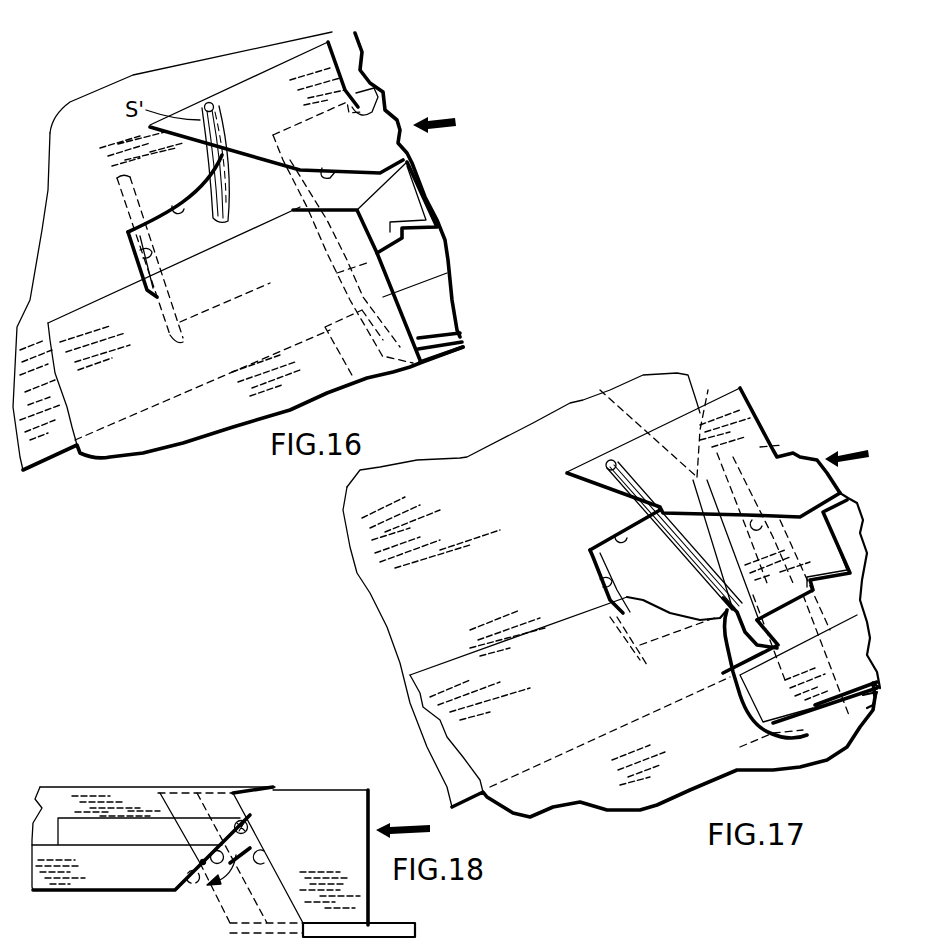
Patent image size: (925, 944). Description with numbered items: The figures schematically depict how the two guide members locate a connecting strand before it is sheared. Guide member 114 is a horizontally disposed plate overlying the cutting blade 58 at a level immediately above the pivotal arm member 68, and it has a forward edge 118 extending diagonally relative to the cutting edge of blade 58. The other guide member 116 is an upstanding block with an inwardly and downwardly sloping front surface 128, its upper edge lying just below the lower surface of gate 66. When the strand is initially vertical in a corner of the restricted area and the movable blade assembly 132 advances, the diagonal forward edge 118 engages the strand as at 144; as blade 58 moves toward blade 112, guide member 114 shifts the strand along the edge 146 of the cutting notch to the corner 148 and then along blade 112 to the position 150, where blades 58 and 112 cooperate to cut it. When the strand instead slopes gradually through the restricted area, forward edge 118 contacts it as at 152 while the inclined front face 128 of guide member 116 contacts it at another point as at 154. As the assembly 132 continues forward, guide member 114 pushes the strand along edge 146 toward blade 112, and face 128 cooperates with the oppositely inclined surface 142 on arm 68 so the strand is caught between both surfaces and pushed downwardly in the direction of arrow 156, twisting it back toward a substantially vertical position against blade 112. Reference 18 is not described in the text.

In FIG. 17, the direction arrow 18 is at (875, 684).
In FIG. 16, the cutting blade 58 is at (400, 193).
In FIG. 17, the cutting blade 58 is at (807, 537).
In FIG. 16, the gate 66 is at (62, 338).
In FIG. 17, the gate 66 is at (435, 687).
In FIG. 16, the pivotal arm member 68 is at (83, 120).
In FIG. 17, the pivotal arm member 68 is at (362, 550).
In FIG. 18, the pivotal arm member 68 is at (65, 797).
In FIG. 16, the blade 112 is at (138, 256).
In FIG. 17, the blade 112 is at (600, 582).
In FIG. 16, the guide member 114 is at (272, 80).
In FIG. 17, the guide member 114 is at (710, 413).
In FIG. 18, the guide member 114 is at (230, 860).
In FIG. 16, the guide member 116 is at (433, 327).
In FIG. 17, the guide member 116 is at (790, 667).
In FIG. 18, the guide member 116 is at (357, 803).
In FIG. 16, the forward edge 118 is at (342, 167).
In FIG. 17, the forward edge 118 is at (760, 520).
In FIG. 18, the front surface 128 is at (267, 861).
In FIG. 16, the movable blade assembly 132 is at (387, 88).
In FIG. 17, the movable blade assembly 132 is at (813, 462).
In FIG. 18, the laterally disposed surface 142 is at (200, 863).
In FIG. 16, the point of engagement 144 is at (232, 152).
In FIG. 16, the edge of the cutting notch 146 is at (180, 205).
In FIG. 17, the edge of the cutting notch 146 is at (620, 537).
In FIG. 16, the corner 148 is at (127, 235).
In FIG. 17, the corner 148 is at (587, 553).
In FIG. 16, the position 150 is at (112, 195).
In FIG. 17, the point of contact 152 is at (663, 507).
In FIG. 17, the point of contact 154 is at (740, 747).
In FIG. 18, the point of contact 154 is at (247, 829).
In FIG. 18, the arrow 156 is at (250, 848).